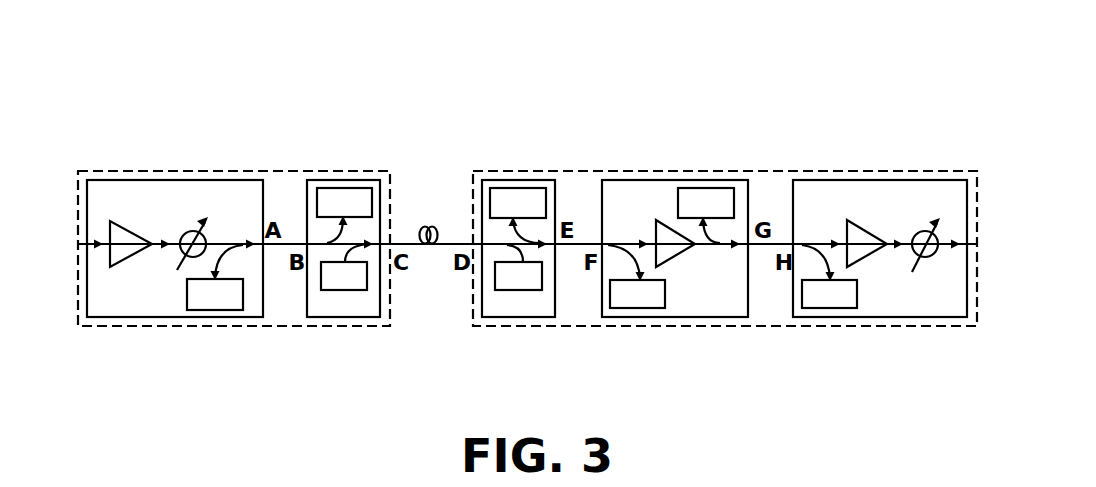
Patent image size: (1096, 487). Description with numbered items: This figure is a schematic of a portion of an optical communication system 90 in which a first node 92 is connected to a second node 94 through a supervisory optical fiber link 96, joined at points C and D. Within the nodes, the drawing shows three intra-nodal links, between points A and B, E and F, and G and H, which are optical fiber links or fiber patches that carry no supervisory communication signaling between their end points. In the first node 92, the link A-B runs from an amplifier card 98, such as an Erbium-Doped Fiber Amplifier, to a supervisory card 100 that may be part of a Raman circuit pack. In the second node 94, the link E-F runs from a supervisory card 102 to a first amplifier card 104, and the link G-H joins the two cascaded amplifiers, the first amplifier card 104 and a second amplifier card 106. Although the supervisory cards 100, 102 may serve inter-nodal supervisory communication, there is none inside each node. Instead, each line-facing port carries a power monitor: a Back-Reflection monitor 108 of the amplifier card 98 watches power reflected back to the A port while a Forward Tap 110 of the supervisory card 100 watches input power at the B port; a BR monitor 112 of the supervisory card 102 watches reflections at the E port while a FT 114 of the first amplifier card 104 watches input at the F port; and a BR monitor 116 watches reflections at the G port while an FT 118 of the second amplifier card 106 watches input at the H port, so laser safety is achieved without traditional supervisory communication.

The optical communication system 90 is at (257, 110).
The first node 92 is at (205, 326).
The second node 94 is at (728, 326).
The supervisory optical fiber link 96 is at (448, 242).
The amplifier card 98 is at (178, 180).
The supervisory card 100 is at (320, 317).
The supervisory card 102 is at (498, 317).
The first amplifier card 104 is at (660, 180).
The second amplifier card 106 is at (870, 180).
The Back-Reflection monitor 108 is at (187, 293).
The Forward Tap 110 is at (348, 188).
The BR monitor 112 is at (518, 188).
The Forward Tap 114 is at (665, 294).
The BR monitor 116 is at (713, 188).
The Forward Tap 118 is at (857, 294).